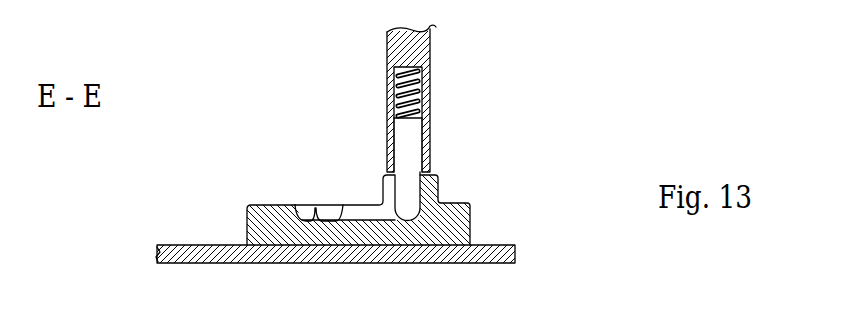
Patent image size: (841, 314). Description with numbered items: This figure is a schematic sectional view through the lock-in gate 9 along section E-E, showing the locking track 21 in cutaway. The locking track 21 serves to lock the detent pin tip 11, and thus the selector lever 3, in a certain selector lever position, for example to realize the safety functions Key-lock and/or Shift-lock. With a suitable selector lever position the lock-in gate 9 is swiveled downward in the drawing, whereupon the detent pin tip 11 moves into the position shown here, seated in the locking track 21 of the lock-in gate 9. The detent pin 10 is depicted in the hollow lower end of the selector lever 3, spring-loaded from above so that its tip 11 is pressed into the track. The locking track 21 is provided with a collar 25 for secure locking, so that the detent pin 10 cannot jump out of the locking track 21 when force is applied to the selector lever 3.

The selector lever 3 is at (405, 55).
The lock-in gate 9 is at (270, 215).
The detent pin 10 is at (408, 162).
The detent pin tip 11 is at (408, 210).
The locking track 21 is at (350, 212).
The collar 25 is at (432, 190).